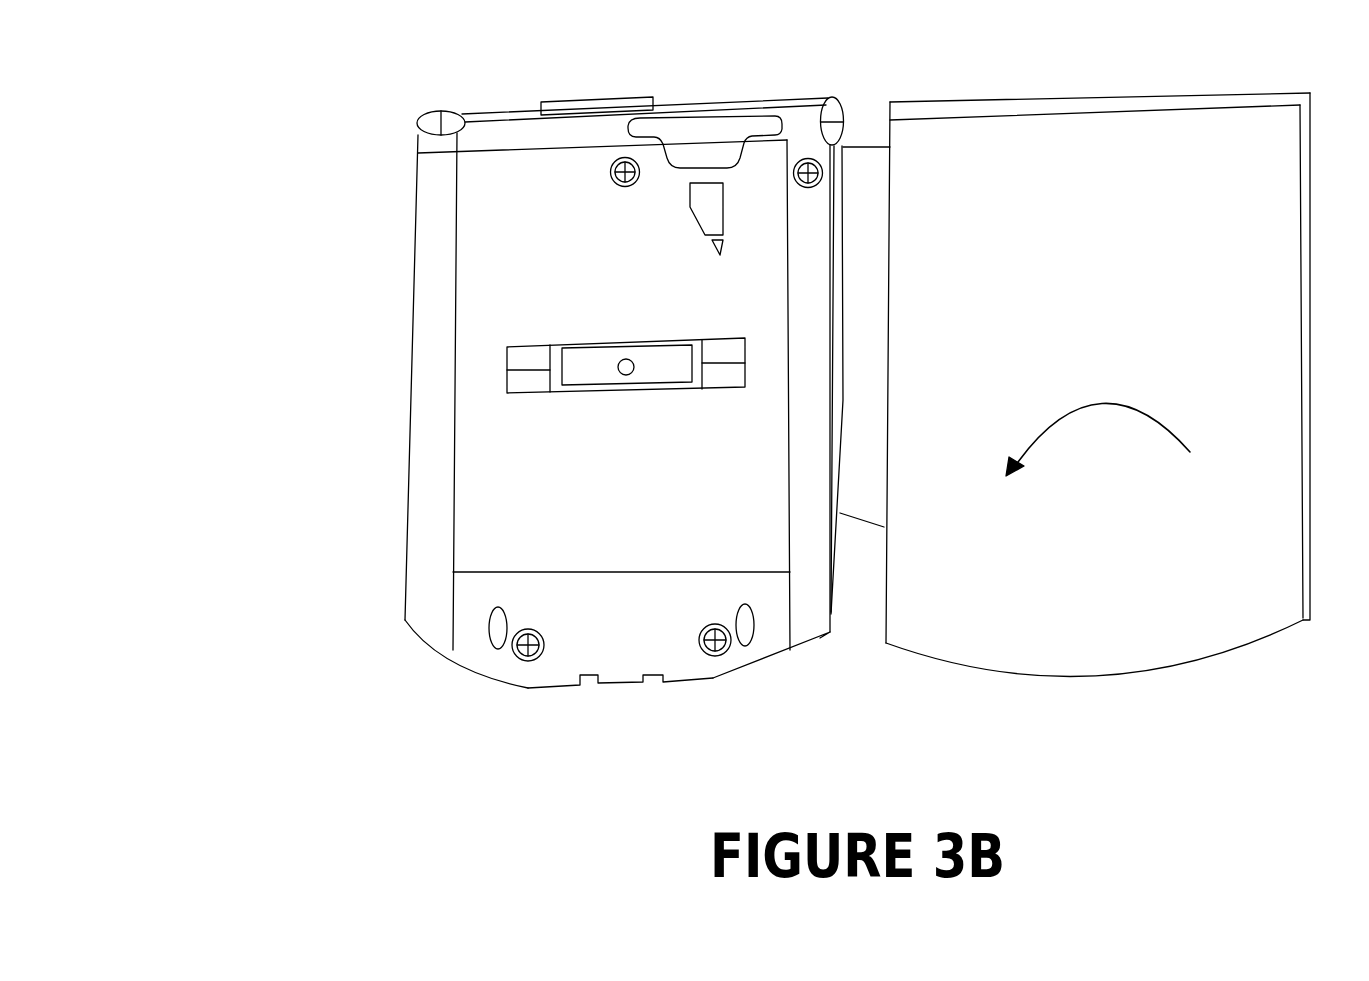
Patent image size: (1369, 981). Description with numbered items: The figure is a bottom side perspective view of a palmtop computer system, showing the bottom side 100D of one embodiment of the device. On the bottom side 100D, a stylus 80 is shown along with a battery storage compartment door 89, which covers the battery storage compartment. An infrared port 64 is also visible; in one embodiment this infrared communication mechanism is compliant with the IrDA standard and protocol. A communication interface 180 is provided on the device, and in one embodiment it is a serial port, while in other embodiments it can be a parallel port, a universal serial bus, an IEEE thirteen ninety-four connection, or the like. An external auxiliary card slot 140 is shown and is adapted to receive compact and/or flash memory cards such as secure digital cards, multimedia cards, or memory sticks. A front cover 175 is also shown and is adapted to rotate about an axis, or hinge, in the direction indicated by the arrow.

The bottom side 100D is at (265, 64).
The stylus 80 is at (428, 112).
The infrared port 64 is at (597, 100).
The external auxiliary card slot 140 is at (726, 152).
The battery storage compartment door 89 is at (583, 375).
The communication interface 180 is at (622, 685).
The front cover 175 is at (1143, 642).